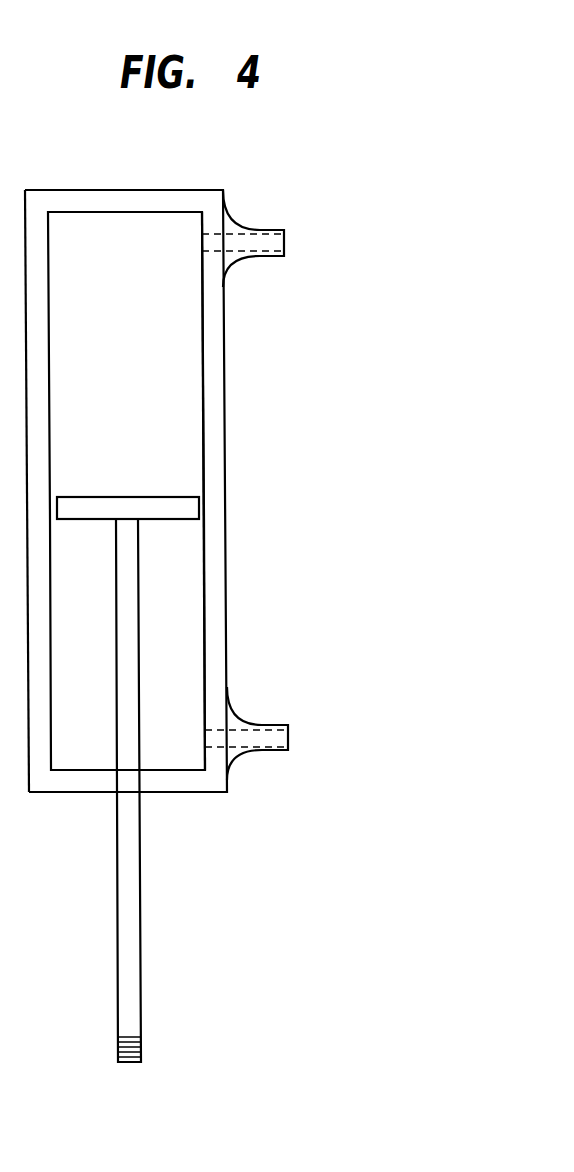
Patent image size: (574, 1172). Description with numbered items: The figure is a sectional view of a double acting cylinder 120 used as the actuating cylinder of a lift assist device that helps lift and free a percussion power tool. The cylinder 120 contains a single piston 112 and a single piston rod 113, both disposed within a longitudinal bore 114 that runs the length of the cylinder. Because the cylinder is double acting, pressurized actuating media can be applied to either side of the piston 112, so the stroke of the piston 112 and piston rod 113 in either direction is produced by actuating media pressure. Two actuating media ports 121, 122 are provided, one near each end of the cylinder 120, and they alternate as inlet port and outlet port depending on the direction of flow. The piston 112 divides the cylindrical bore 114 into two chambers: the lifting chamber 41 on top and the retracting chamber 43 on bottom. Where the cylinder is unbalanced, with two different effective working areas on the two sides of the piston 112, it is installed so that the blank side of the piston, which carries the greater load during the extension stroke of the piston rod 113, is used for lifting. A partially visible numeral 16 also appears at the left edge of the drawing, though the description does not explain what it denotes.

The housing 16 is at (14, 491).
The lifting chamber 41 is at (94, 238).
The retracting chamber 43 is at (177, 610).
The piston 112 is at (170, 493).
The piston rod 113 is at (142, 913).
The longitudinal bore 114 is at (225, 350).
The double acting cylinder 120 is at (237, 498).
The actuating media port 121 is at (284, 243).
The actuating media port 122 is at (288, 738).